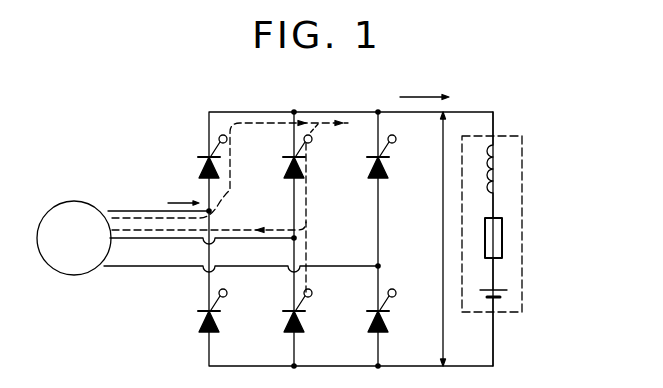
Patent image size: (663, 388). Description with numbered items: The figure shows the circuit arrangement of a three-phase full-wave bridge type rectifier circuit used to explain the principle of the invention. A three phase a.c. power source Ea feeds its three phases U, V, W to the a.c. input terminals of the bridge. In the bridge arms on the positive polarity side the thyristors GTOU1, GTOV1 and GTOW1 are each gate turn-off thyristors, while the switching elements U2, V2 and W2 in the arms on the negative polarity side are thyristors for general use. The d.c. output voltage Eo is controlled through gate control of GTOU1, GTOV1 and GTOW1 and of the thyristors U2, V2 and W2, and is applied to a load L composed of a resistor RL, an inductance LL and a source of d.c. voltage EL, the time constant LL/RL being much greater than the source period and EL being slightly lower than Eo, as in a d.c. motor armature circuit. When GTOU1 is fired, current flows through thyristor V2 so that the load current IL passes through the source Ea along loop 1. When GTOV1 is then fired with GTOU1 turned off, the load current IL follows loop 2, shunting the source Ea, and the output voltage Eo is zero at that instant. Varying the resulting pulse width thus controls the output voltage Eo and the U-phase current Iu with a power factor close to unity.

The loop 1 is at (232, 192).
The loop 2 is at (318, 204).
The three phase a.c. power source Ea is at (74, 238).
The d.c. output voltage Eo is at (432, 239).
The U-phase U is at (158, 197).
The V-phase V is at (155, 239).
The W-phase W is at (241, 284).
The gate turn-off thyristor GTOU1 is at (205, 170).
The gate turn-off thyristor GTOV1 is at (285, 157).
The gate turn-off thyristor GTOW1 is at (368, 157).
The thyristor U2 is at (226, 315).
The thyristor V2 is at (310, 315).
The thyristor W2 is at (399, 315).
The U-phase current Iu is at (183, 192).
The load current IL is at (424, 86).
The load L is at (522, 142).
The inductance LL is at (517, 176).
The resistor RL is at (502, 240).
The source of d.c. voltage EL is at (500, 297).